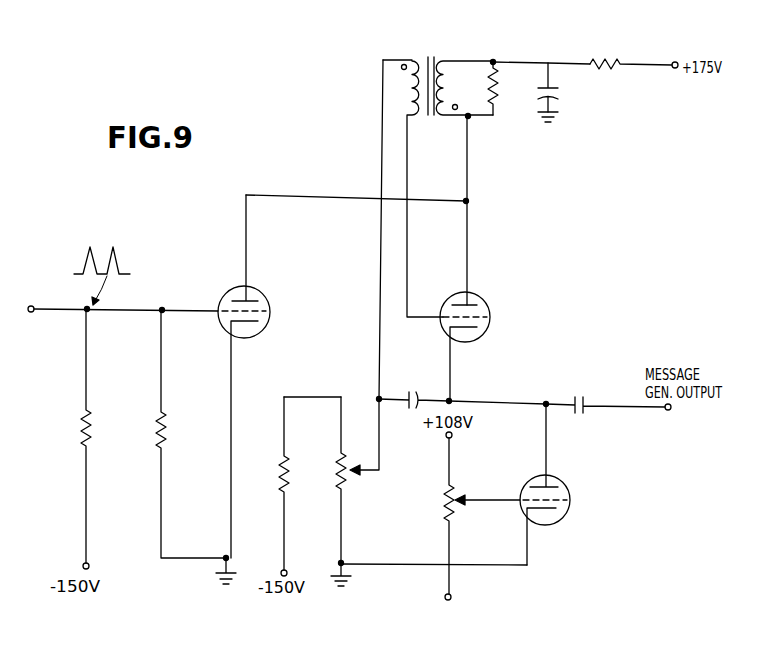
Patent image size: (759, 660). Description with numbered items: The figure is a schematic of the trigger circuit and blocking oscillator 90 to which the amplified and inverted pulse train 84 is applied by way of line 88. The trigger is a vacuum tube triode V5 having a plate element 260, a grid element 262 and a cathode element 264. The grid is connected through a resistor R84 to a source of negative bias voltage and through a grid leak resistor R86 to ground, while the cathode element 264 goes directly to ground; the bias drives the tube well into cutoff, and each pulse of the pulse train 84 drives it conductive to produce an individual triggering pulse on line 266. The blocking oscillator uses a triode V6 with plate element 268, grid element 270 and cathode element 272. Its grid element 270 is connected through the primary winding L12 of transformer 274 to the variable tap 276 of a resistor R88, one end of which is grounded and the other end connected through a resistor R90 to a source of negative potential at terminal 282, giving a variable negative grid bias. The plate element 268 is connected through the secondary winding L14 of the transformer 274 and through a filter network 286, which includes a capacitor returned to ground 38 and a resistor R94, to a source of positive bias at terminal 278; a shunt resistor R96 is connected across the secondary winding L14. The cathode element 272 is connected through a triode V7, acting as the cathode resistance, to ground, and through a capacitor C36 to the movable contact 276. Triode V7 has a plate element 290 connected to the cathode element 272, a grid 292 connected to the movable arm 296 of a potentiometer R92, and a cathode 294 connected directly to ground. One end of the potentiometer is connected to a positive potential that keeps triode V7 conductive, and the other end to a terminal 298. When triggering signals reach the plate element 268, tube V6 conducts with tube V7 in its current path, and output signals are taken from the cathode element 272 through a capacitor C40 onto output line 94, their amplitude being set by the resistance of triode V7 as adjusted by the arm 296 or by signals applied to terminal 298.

The pulse train 84 is at (117, 263).
The line 88 is at (75, 310).
The trigger circuit and blocking oscillator 90 is at (348, 161).
The output line 94 is at (602, 407).
The resistor R84 is at (91, 421).
The grid leak resistor R86 is at (166, 424).
The vacuum tube triode V5 is at (262, 376).
The plate element 260 is at (253, 292).
The grid element 262 is at (263, 310).
The cathode element 264 is at (248, 323).
The line 266 is at (290, 196).
The primary winding L12 is at (417, 82).
The secondary winding L14 is at (447, 88).
The transformer 274 is at (435, 58).
The shunt resistor R96 is at (498, 79).
The filter network 286 is at (598, 91).
The ground 38 is at (558, 99).
The resistor R94 is at (606, 58).
The terminal 278 is at (673, 71).
The triode V6 is at (483, 339).
The plate element 268 is at (477, 297).
The grid element 270 is at (487, 317).
The cathode element 272 is at (471, 329).
The capacitor C36 is at (407, 395).
The capacitor C40 is at (573, 400).
The resistor R90 is at (278, 471).
The resistor R88 is at (337, 472).
The variable tap 276 is at (366, 470).
The terminal 282 is at (287, 571).
The potentiometer R92 is at (443, 500).
The movable arm 296 is at (459, 498).
The terminal 298 is at (450, 594).
The triode V7 is at (557, 484).
The plate element 290 is at (552, 486).
The grid 292 is at (560, 499).
The cathode 294 is at (542, 511).